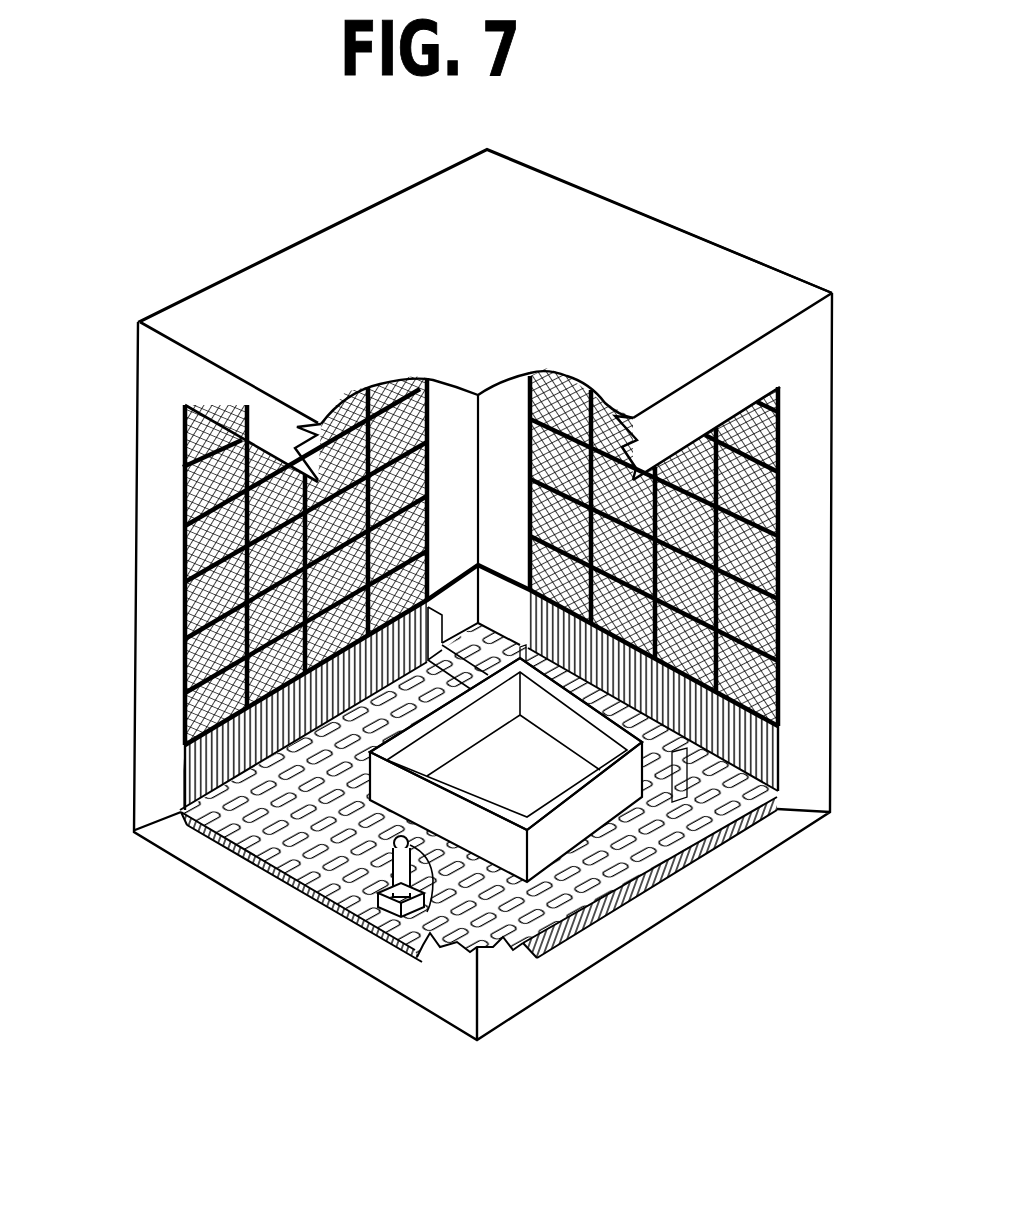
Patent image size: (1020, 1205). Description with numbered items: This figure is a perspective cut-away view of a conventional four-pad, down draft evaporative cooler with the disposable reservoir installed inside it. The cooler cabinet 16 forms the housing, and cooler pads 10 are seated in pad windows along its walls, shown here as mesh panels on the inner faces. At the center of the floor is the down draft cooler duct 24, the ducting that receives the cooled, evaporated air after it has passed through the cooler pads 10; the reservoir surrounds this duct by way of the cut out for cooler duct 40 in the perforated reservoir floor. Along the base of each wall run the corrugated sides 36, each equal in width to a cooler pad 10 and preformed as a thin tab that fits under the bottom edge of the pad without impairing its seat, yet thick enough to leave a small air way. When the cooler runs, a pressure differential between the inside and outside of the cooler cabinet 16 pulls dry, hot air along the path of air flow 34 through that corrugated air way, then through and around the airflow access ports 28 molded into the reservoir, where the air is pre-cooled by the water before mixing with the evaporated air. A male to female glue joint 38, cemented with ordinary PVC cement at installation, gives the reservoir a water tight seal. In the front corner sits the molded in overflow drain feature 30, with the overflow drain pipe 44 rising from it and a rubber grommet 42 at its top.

The cooler pad 10 is at (744, 508).
The cooler cabinet 16 is at (490, 216).
The down draft cooler duct 24 is at (400, 750).
The airflow access port 28 is at (553, 838).
The molded in overflow drain feature 30 is at (383, 897).
The path of air flow 34 is at (137, 540).
The corrugated sides 36 is at (740, 740).
The male to female glue joint 38 is at (700, 802).
The cut out for cooler duct 40 is at (657, 863).
The rubber grommet 42 is at (393, 843).
The overflow drain pipe 44 is at (400, 873).